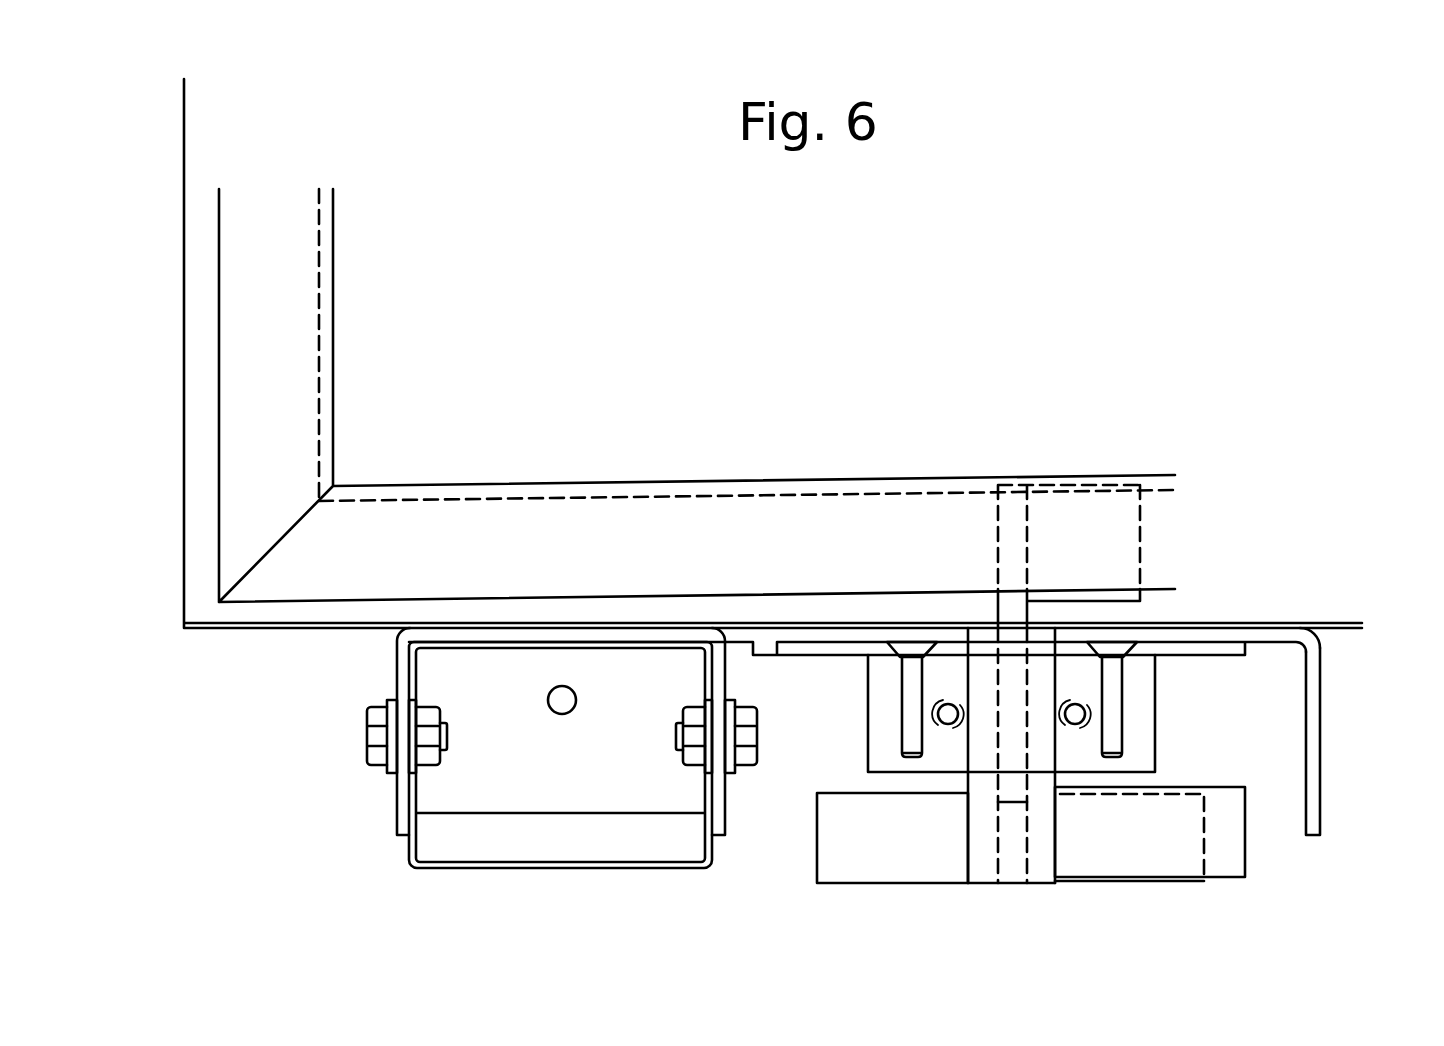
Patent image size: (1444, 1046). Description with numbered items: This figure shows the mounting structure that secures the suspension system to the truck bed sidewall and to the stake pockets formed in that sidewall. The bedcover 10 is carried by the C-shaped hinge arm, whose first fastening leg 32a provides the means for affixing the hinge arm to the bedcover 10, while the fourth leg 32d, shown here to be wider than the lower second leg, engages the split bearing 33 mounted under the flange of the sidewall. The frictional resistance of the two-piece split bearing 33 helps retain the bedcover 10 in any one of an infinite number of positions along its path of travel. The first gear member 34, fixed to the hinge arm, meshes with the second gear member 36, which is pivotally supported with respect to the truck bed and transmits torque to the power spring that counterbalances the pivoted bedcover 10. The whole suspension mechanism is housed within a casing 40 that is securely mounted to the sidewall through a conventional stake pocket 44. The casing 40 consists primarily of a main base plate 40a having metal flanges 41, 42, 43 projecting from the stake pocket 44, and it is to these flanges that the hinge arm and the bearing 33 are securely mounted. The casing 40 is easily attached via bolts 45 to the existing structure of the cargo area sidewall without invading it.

The bedcover 10 is at (563, 563).
The first fastening leg 32a is at (1012, 539).
The fourth leg 32d is at (1043, 825).
The split bearing 33 is at (1147, 721).
The first gear member 34 is at (1235, 858).
The second gear member 36 is at (890, 883).
The casing 40 is at (921, 698).
The main base plate 40a is at (1282, 632).
The metal flange 41 is at (1322, 790).
The metal flange 42 is at (718, 807).
The metal flange 43 is at (395, 808).
The stake pocket 44 is at (562, 868).
The bolts 45 is at (372, 735).